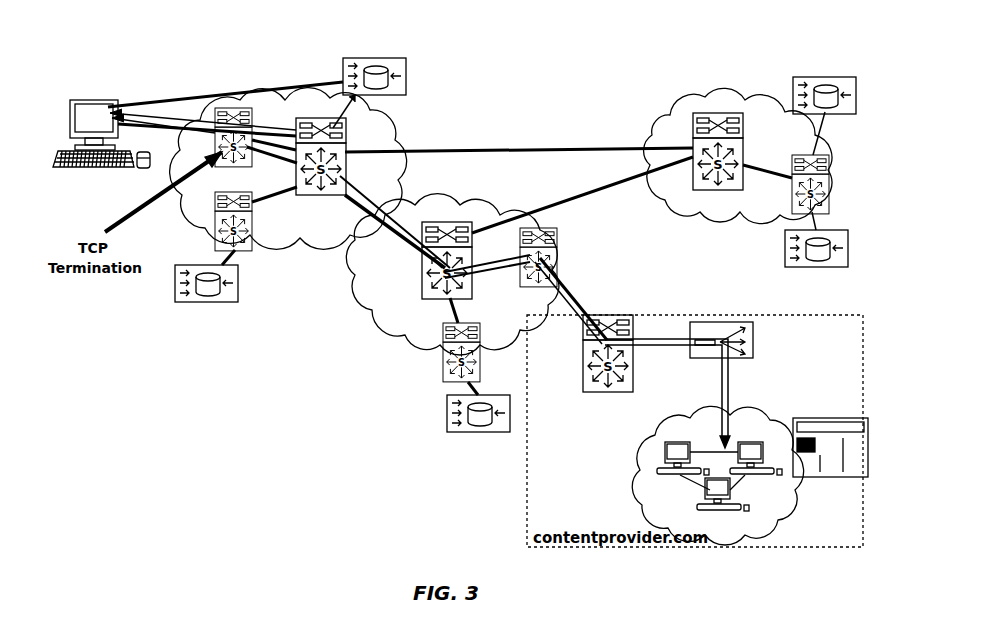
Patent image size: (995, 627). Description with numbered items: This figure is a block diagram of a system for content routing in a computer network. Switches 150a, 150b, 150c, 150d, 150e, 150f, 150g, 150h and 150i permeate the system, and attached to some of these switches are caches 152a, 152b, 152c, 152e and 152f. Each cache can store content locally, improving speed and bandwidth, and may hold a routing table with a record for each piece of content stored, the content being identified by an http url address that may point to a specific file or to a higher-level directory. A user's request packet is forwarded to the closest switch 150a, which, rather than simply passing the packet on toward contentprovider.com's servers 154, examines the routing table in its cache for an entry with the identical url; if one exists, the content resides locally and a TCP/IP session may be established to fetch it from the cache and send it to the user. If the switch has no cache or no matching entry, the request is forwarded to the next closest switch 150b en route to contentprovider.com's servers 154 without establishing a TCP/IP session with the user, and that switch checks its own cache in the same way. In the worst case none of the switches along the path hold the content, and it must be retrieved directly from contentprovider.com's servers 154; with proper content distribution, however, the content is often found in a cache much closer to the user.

The switch 150a is at (232, 108).
The switch 150b is at (345, 130).
The switch 150c is at (215, 228).
The switch 150d is at (718, 113).
The switch 150e is at (828, 185).
The switch 150f is at (432, 222).
The switch 150g is at (557, 252).
The switch 150h is at (443, 360).
The switch 150i is at (612, 315).
The cache 152a is at (238, 283).
The cache 152b is at (408, 73).
The cache 152c is at (447, 412).
The cache 152e is at (825, 77).
The cache 152f is at (785, 252).
The contentprovider.com's servers 154 is at (795, 505).